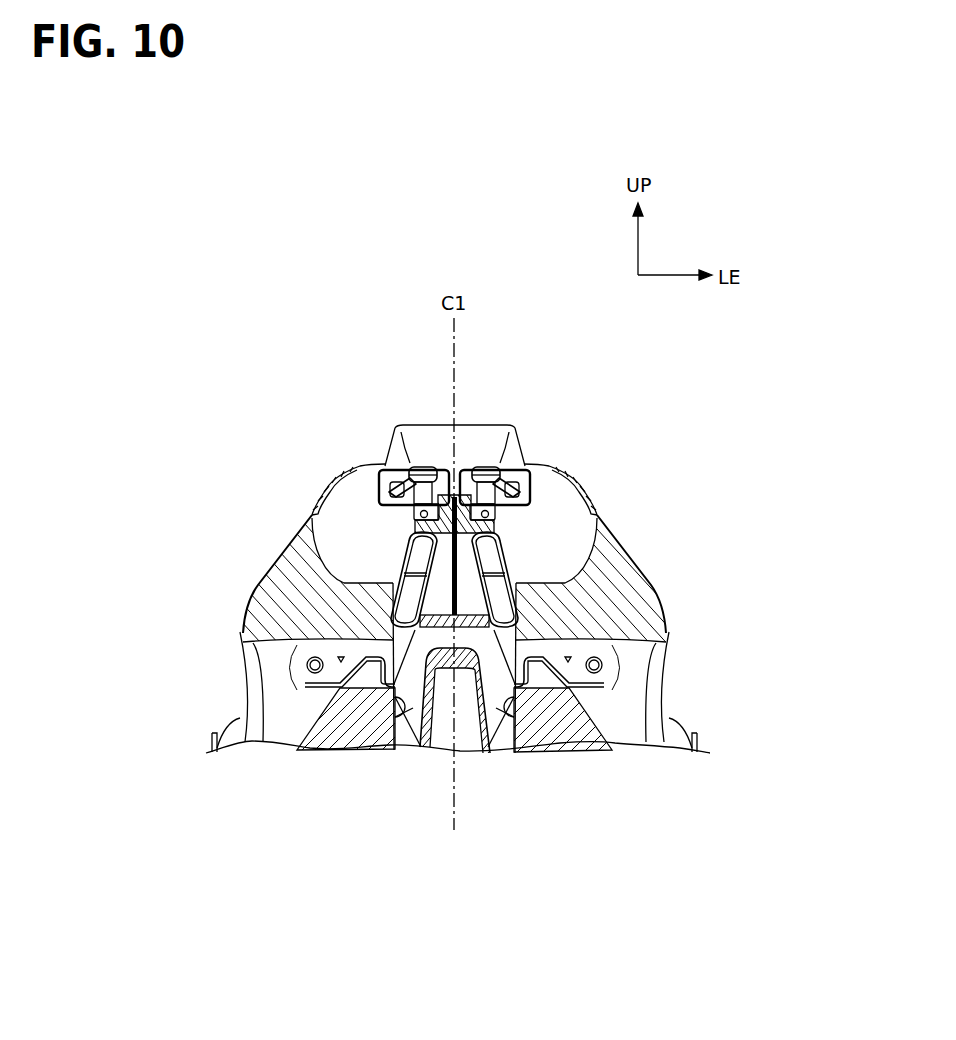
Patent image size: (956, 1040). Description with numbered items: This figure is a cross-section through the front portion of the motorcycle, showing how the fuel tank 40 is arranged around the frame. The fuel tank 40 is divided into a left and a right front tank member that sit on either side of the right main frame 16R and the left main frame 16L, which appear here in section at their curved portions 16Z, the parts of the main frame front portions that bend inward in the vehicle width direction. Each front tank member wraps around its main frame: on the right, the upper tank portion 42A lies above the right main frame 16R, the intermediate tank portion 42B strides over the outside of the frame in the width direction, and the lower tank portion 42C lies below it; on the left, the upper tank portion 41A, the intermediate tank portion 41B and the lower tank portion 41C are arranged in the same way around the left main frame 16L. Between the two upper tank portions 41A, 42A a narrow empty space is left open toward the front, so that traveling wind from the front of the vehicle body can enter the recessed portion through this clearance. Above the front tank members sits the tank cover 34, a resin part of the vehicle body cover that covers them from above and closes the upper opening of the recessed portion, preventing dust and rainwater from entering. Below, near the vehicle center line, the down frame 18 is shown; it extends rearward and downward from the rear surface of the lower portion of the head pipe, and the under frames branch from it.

The tank cover 34 is at (425, 423).
The fuel tank 40 is at (600, 488).
The upper tank portion 42A is at (310, 518).
The intermediate tank portion 42B is at (270, 577).
The lower tank portion 42C is at (257, 690).
The upper tank portion 41A is at (603, 515).
The intermediate tank portion 41B is at (638, 600).
The lower tank portion 41C is at (657, 728).
The curved portion 16Z is at (463, 587).
The right main frame 16R is at (397, 609).
The left main frame 16L is at (640, 634).
The down frame 18 is at (490, 752).